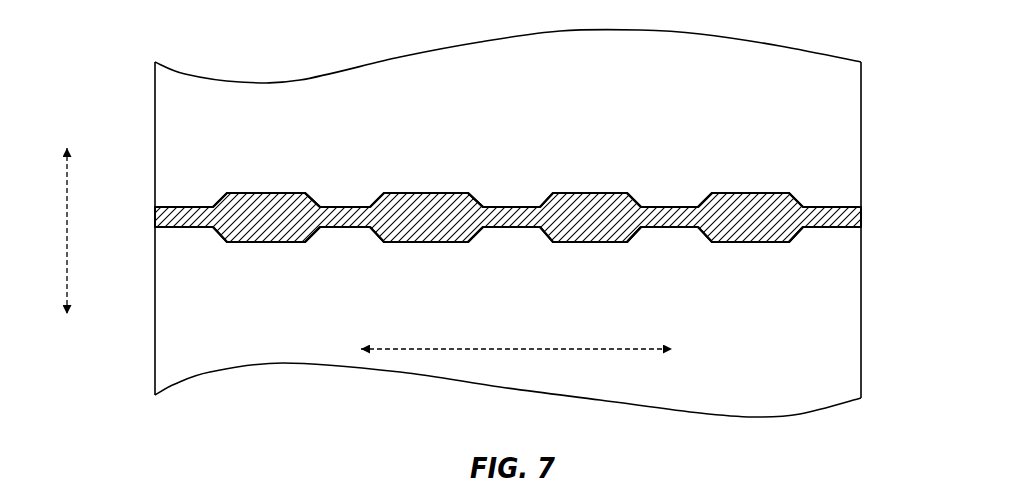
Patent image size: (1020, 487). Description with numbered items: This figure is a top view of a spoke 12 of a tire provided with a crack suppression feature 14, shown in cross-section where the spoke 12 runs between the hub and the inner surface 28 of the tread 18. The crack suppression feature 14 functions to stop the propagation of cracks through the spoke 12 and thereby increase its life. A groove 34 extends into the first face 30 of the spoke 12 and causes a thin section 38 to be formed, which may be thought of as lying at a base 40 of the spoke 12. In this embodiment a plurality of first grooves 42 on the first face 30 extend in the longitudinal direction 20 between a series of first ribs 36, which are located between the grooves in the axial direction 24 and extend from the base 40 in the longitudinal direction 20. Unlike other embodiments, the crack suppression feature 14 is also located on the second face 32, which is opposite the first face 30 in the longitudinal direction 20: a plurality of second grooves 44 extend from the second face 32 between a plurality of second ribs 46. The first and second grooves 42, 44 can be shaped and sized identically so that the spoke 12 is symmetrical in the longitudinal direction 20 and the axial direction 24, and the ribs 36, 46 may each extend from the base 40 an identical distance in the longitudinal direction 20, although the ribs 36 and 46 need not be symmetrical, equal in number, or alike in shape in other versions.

The spoke 12 is at (858, 214).
The crack suppression feature 14 is at (371, 186).
The tread 18 is at (777, 400).
The longitudinal direction 20 is at (66, 220).
The axial direction 24 is at (516, 351).
The inner surface of the tread 28 is at (833, 62).
The first face 30 is at (564, 248).
The second face 32 is at (589, 187).
The groove 34 is at (355, 206).
The first ribs 36 is at (257, 240).
The thin section 38 is at (350, 229).
The base 40 is at (832, 229).
The first grooves 42 is at (329, 243).
The second grooves 44 is at (321, 187).
The second ribs 46 is at (268, 192).